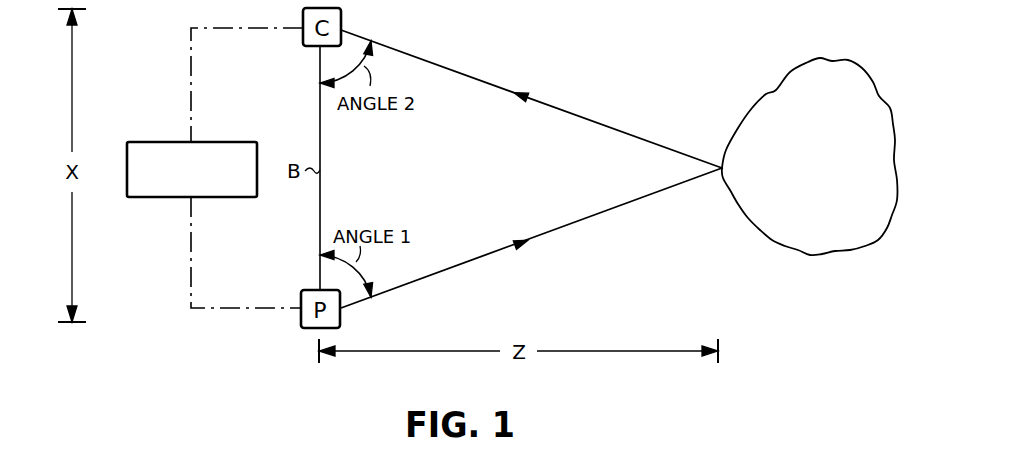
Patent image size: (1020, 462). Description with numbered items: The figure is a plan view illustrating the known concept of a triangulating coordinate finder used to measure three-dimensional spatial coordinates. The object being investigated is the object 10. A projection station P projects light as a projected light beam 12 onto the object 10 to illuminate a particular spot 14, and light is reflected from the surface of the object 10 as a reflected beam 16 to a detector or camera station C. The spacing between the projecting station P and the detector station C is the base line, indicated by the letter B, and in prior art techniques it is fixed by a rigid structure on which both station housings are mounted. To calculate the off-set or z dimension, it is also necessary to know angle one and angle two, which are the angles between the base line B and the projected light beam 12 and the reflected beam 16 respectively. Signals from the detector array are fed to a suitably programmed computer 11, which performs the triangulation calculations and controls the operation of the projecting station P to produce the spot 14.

The object 10 is at (855, 188).
The computer 11 is at (147, 197).
The projected light beam 12 is at (592, 224).
The spot 14 is at (722, 168).
The reflected beam 16 is at (587, 118).